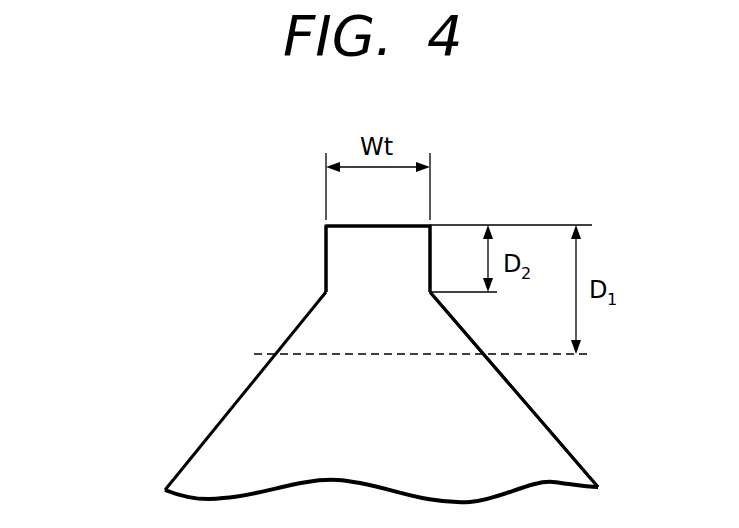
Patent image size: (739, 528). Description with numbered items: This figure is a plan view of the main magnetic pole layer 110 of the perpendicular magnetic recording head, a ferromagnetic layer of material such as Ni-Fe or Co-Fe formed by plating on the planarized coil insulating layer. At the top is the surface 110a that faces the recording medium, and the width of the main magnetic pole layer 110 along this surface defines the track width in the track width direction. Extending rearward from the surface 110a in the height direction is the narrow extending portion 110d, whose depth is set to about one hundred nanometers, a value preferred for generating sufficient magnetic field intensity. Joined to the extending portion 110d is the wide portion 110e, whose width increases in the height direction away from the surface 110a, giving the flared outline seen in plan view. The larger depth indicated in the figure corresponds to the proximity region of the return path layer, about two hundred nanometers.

The main magnetic pole layer 110 is at (182, 406).
The surface facing the recording medium 110a is at (397, 223).
The extending portion 110d is at (342, 262).
The wide portion 110e is at (543, 448).